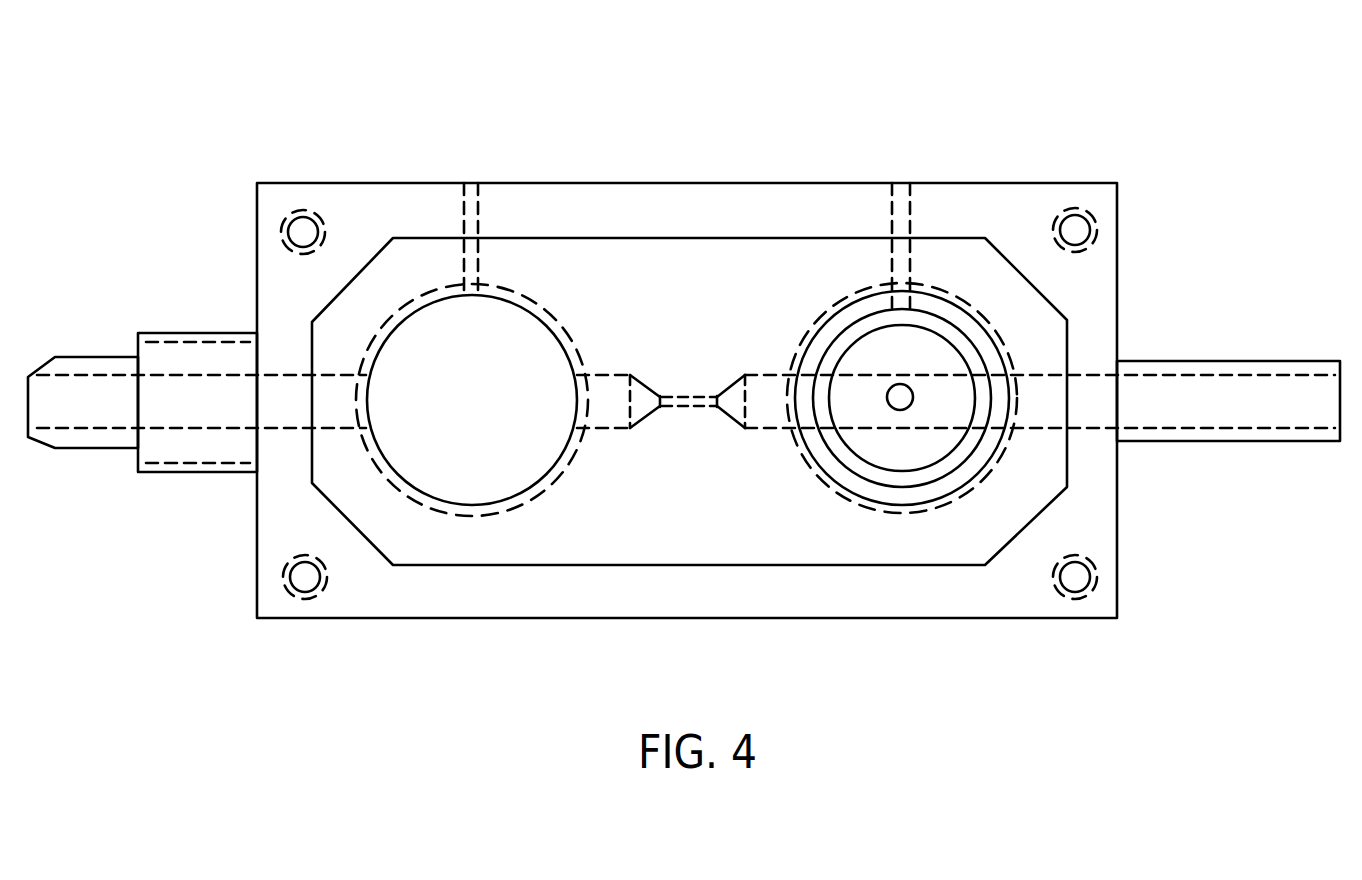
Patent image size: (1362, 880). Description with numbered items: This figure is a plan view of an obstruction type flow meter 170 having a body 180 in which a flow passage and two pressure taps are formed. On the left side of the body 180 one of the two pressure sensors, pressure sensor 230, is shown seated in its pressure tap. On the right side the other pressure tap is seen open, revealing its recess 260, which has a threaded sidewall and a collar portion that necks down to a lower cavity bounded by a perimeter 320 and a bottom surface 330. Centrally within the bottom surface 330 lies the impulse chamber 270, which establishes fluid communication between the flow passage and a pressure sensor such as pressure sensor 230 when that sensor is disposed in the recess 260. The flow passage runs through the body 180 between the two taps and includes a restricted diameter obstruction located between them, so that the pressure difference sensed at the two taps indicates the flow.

The obstruction type flow meter 170 is at (250, 86).
The body 180 is at (352, 179).
The pressure sensor 230 is at (487, 412).
The recess 260 is at (878, 454).
The impulse chamber 270 is at (912, 385).
The perimeter 320 is at (960, 352).
The bottom surface 330 is at (863, 353).